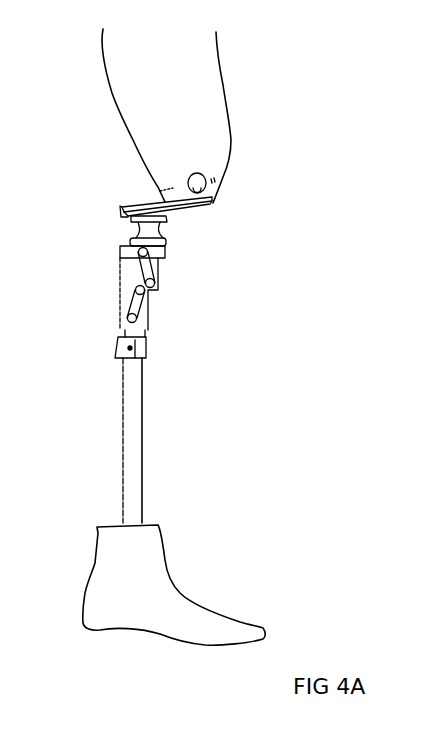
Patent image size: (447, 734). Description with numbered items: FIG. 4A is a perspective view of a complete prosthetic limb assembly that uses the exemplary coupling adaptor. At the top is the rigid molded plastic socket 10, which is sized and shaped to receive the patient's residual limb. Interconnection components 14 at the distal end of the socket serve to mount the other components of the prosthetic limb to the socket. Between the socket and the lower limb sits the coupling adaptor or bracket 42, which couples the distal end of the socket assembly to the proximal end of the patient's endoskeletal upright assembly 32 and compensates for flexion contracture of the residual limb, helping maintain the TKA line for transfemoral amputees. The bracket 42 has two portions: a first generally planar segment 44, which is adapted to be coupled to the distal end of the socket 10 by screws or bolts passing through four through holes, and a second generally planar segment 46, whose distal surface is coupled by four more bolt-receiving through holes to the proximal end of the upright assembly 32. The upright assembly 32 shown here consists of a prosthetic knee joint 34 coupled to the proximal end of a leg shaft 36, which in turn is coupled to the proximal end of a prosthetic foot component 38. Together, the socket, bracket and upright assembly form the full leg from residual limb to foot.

The socket 10 is at (213, 96).
The interconnection components 14 is at (167, 233).
The upright assembly 32 is at (189, 338).
The prosthetic knee joint 34 is at (122, 252).
The leg shaft 36 is at (126, 394).
The prosthetic foot component 38 is at (207, 620).
The coupling adaptor bracket 42 is at (223, 198).
The first generally planar segment 44 is at (200, 204).
The second generally planar segment 46 is at (136, 201).